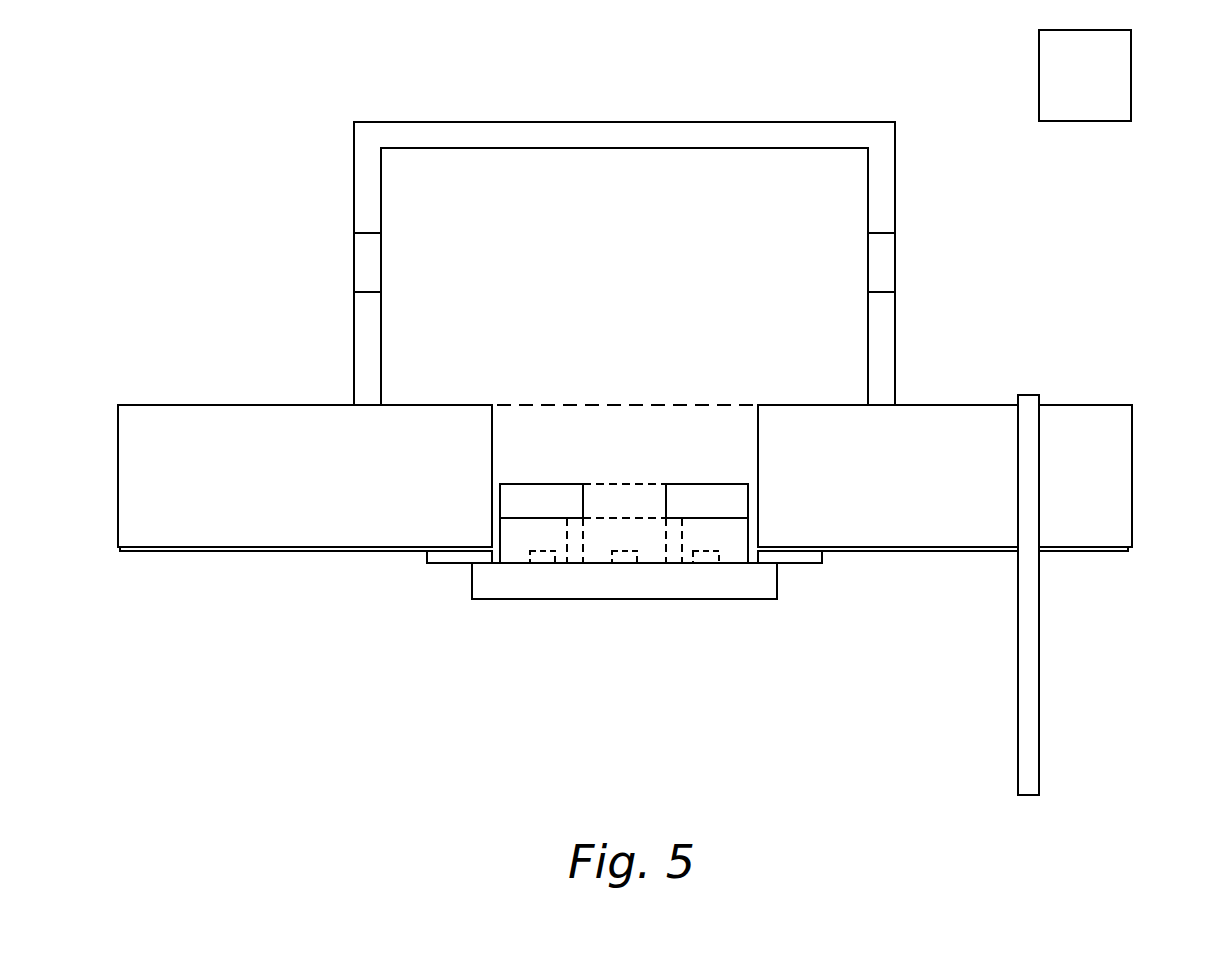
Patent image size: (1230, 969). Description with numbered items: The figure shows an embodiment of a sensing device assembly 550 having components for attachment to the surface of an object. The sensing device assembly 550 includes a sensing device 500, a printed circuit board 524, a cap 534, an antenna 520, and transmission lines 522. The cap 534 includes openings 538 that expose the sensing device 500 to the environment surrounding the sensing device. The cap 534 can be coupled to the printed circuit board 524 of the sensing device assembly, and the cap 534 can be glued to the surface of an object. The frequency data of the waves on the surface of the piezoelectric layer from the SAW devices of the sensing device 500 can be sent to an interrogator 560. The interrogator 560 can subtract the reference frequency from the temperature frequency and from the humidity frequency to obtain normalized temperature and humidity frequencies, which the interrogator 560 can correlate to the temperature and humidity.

The sensing device assembly 550 is at (190, 100).
The cap 534 is at (896, 142).
The openings 538 is at (356, 265).
The printed circuit board 524 is at (117, 477).
The transmission lines 522 is at (270, 551).
The sensing device 500 is at (546, 469).
The antenna 520 is at (1017, 668).
The interrogator 560 is at (1133, 75).